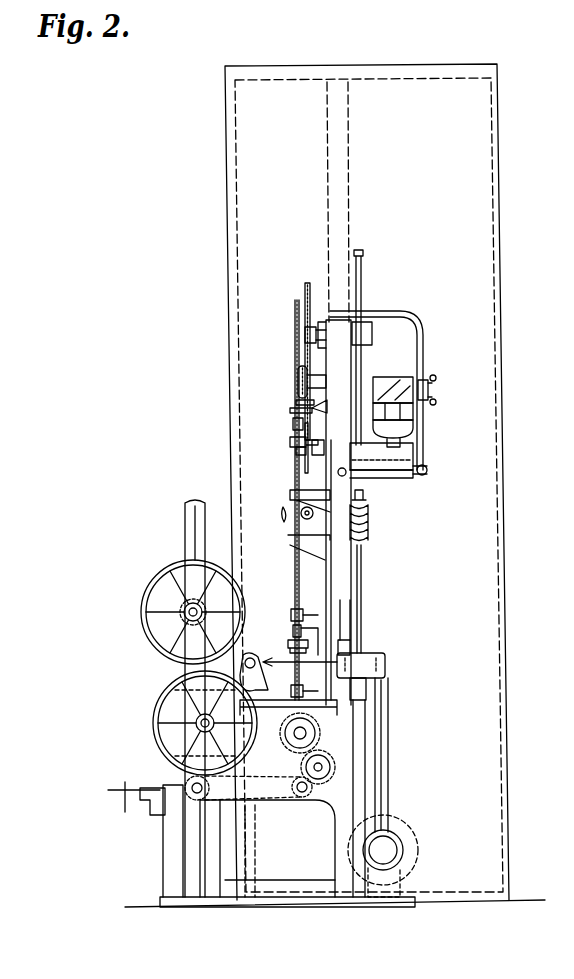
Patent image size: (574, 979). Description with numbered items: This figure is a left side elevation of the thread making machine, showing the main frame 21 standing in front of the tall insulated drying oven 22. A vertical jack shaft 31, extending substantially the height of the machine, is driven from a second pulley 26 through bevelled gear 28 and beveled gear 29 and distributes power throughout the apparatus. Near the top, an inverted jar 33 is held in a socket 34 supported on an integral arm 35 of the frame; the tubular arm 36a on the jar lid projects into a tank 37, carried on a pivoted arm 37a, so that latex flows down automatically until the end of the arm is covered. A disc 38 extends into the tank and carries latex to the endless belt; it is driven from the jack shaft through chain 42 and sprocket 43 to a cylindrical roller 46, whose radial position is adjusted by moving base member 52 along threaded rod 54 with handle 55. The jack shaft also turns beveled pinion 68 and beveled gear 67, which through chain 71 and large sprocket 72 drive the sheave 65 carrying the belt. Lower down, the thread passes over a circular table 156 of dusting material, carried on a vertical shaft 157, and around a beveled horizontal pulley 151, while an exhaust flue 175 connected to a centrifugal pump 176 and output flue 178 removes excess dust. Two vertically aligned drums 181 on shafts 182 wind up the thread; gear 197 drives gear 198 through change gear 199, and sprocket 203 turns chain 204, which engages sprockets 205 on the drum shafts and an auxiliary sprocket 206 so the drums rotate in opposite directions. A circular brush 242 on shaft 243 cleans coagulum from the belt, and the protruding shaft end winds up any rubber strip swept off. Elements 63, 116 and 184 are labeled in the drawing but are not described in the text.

The main frame 21 is at (338, 567).
The drying oven 22 is at (506, 590).
The second pulley 26 is at (293, 631).
The bevelled gear 28 is at (288, 684).
The beveled gear 29 is at (289, 645).
The jack shaft 31 is at (295, 582).
The jar 33 is at (388, 386).
The socket 34 is at (414, 408).
The integral arm 35 is at (424, 331).
The tubular arm 36a is at (402, 456).
The tank 37 is at (420, 476).
The arm 37a is at (390, 480).
The disc 38 is at (373, 472).
The chain 42 is at (294, 425).
The sprocket 43 is at (292, 411).
The cylindrical roller 46 is at (292, 442).
The base member 52 is at (297, 452).
The threaded rod 54 is at (296, 476).
The handle 55 is at (284, 515).
The knob 63 is at (435, 390).
The sheave 65 is at (363, 272).
The beveled gear 67 is at (300, 380).
The beveled pinion 68 is at (297, 403).
The chain 71 is at (303, 342).
The large sprocket 72 is at (304, 300).
The nut 116 is at (290, 613).
The horizontal pulley 151 is at (352, 652).
The circular table 156 is at (386, 666).
The vertical shaft 157 is at (367, 691).
The exhaust flue 175 is at (389, 761).
The centrifugal pump 176 is at (405, 840).
The output flue 178 is at (285, 882).
The cylindrical drums 181 is at (153, 718).
The drum shafts 182 is at (184, 604).
The post 184 is at (142, 620).
The second gear 197 is at (322, 727).
The gear 198 is at (302, 798).
The intermediate gear 199 is at (326, 755).
The sprocket 203 is at (292, 784).
The chain 204 is at (250, 812).
The sprockets 205 is at (206, 608).
The auxiliary sprocket 206 is at (210, 789).
The circular brush 242 is at (370, 532).
The brush shaft 243 is at (363, 548).